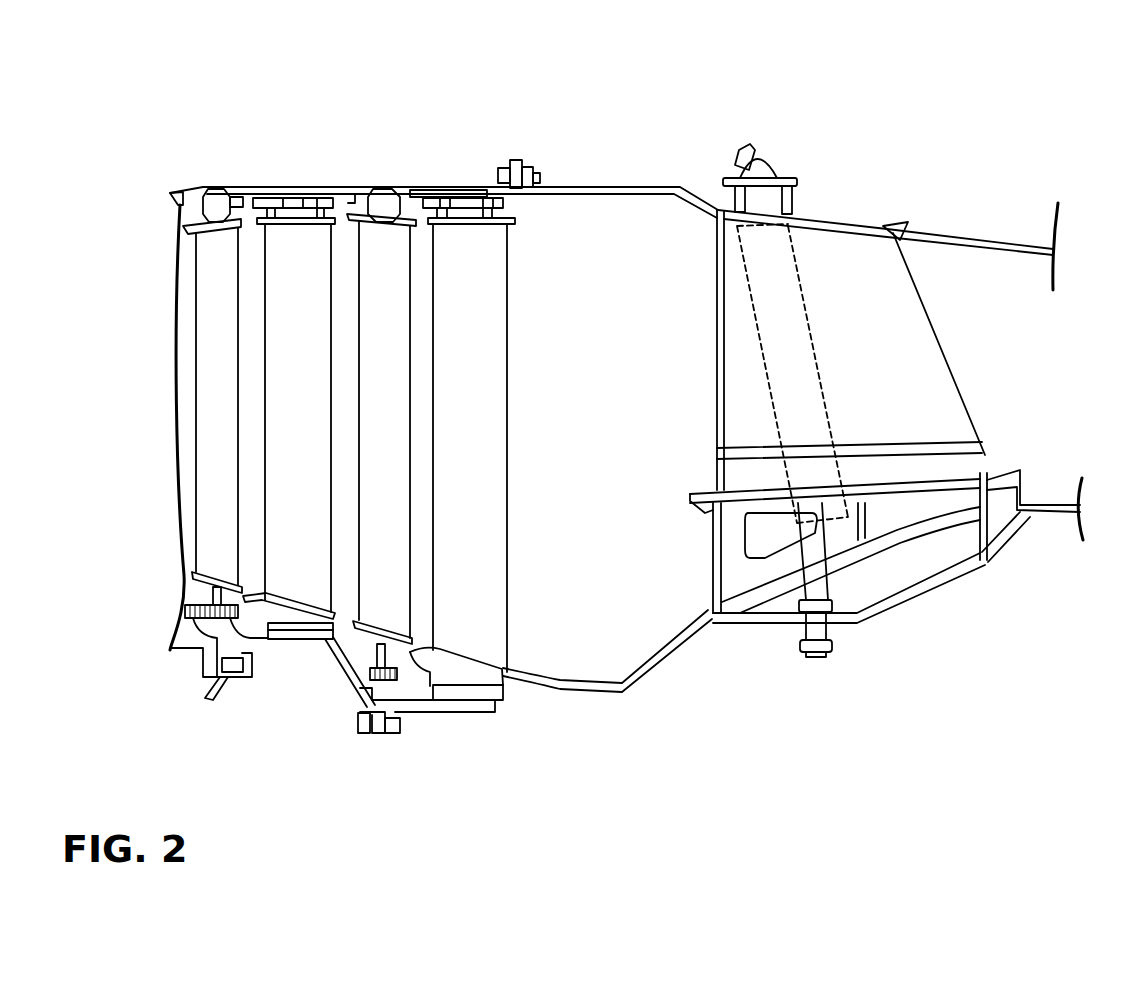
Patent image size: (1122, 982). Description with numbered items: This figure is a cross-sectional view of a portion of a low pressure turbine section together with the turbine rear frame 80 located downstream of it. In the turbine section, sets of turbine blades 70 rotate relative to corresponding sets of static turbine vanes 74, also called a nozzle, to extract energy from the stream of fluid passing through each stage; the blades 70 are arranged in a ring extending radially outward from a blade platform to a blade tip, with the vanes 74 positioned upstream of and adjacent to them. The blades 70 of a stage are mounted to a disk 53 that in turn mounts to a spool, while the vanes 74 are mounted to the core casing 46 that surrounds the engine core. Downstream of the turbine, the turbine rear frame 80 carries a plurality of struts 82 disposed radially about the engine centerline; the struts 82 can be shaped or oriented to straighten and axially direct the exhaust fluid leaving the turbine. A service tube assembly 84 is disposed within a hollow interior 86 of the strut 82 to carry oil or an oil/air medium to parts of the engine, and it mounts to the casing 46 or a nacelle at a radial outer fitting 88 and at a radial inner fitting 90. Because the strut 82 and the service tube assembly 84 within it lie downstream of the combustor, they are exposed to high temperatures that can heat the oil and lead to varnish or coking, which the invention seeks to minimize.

The core casing 46 is at (558, 187).
The disk 53 is at (285, 608).
The turbine blades 70 is at (285, 432).
The static turbine vanes 74 is at (206, 432).
The turbine rear frame 80 is at (638, 112).
The struts 82 is at (937, 325).
The hollow interior 86 is at (870, 355).
The service tube assembly 84 is at (760, 372).
The radial outer fitting 88 is at (804, 201).
The radial inner fitting 90 is at (844, 629).